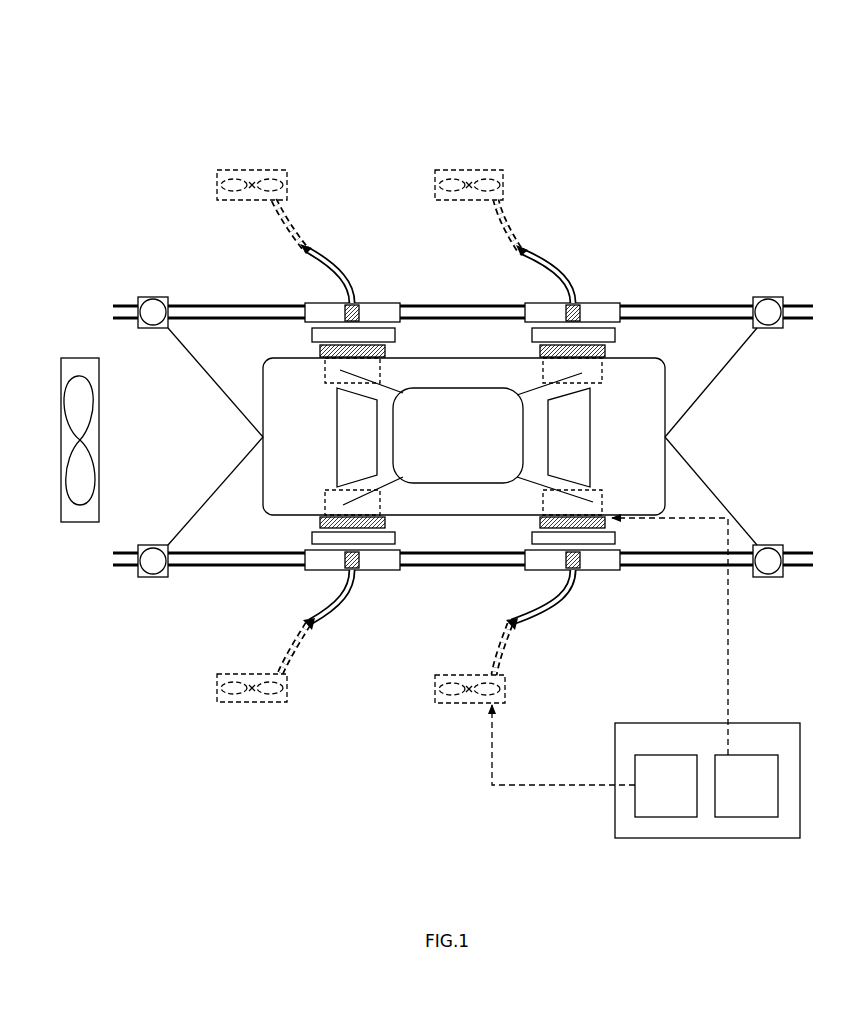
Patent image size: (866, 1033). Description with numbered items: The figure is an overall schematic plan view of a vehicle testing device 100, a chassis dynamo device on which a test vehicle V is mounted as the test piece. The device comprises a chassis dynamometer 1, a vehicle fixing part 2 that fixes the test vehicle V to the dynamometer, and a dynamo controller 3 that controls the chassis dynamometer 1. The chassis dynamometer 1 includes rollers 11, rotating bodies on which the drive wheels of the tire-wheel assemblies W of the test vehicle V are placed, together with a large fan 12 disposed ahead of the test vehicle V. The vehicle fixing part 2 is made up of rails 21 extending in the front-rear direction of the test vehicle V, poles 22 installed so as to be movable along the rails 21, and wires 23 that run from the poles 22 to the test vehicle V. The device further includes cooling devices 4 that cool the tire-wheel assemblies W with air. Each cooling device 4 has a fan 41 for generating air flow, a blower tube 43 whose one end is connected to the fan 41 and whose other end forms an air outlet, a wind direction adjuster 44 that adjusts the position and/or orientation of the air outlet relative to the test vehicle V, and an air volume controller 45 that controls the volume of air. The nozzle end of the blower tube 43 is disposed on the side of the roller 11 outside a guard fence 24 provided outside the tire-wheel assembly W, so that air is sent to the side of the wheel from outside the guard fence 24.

The vehicle testing device 100 is at (642, 100).
The chassis dynamometer 1 is at (627, 533).
The vehicle fixing part 2 is at (150, 270).
The dynamo controller 3 is at (646, 707).
The cooling device 4 is at (450, 437).
The roller 11 is at (390, 355).
The large fan 12 is at (80, 358).
The rail 21 is at (243, 322).
The pole 22 is at (153, 328).
The wire 23 is at (205, 385).
The guard fence 24 is at (305, 333).
The fan 41 is at (252, 170).
The blower tube 43 is at (308, 245).
The wind direction adjuster 44 is at (385, 292).
The air volume controller 45 is at (665, 817).
The test vehicle V is at (488, 356).
The tire-wheel assembly W is at (383, 366).